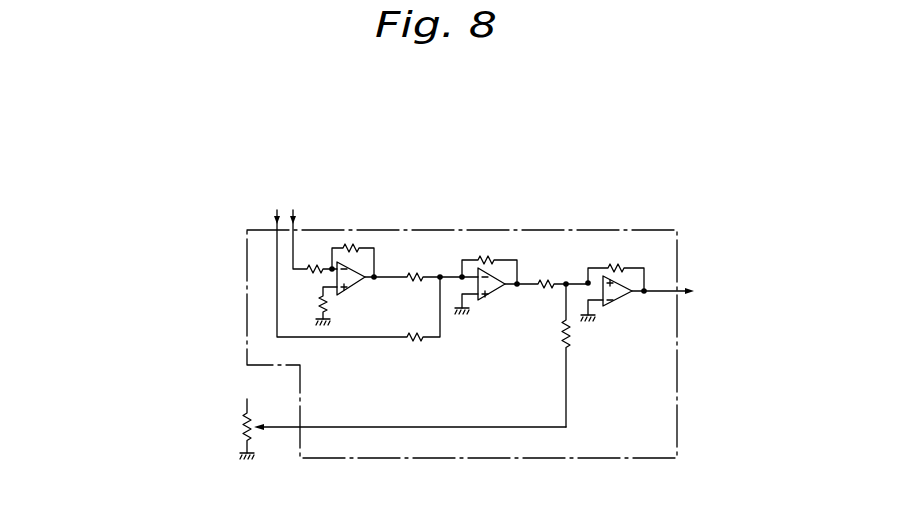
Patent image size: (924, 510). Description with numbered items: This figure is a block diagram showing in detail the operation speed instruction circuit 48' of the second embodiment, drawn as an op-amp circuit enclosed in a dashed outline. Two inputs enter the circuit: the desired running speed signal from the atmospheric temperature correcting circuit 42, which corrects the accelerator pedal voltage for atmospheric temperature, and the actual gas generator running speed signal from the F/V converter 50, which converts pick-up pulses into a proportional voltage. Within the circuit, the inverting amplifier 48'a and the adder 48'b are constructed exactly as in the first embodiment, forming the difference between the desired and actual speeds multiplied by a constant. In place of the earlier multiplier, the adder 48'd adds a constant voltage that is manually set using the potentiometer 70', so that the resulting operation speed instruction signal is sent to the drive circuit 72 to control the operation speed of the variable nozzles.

The F/V converter 50 is at (277, 210).
The atmospheric temperature correcting circuit 42 is at (293, 210).
The operation speed instruction circuit 48' is at (433, 319).
The inverting amplifier 48'a is at (379, 286).
The adder 48'b is at (514, 341).
The adder 48'd is at (635, 311).
The drive circuit 72 is at (789, 310).
The potentiometer 70' is at (224, 416).